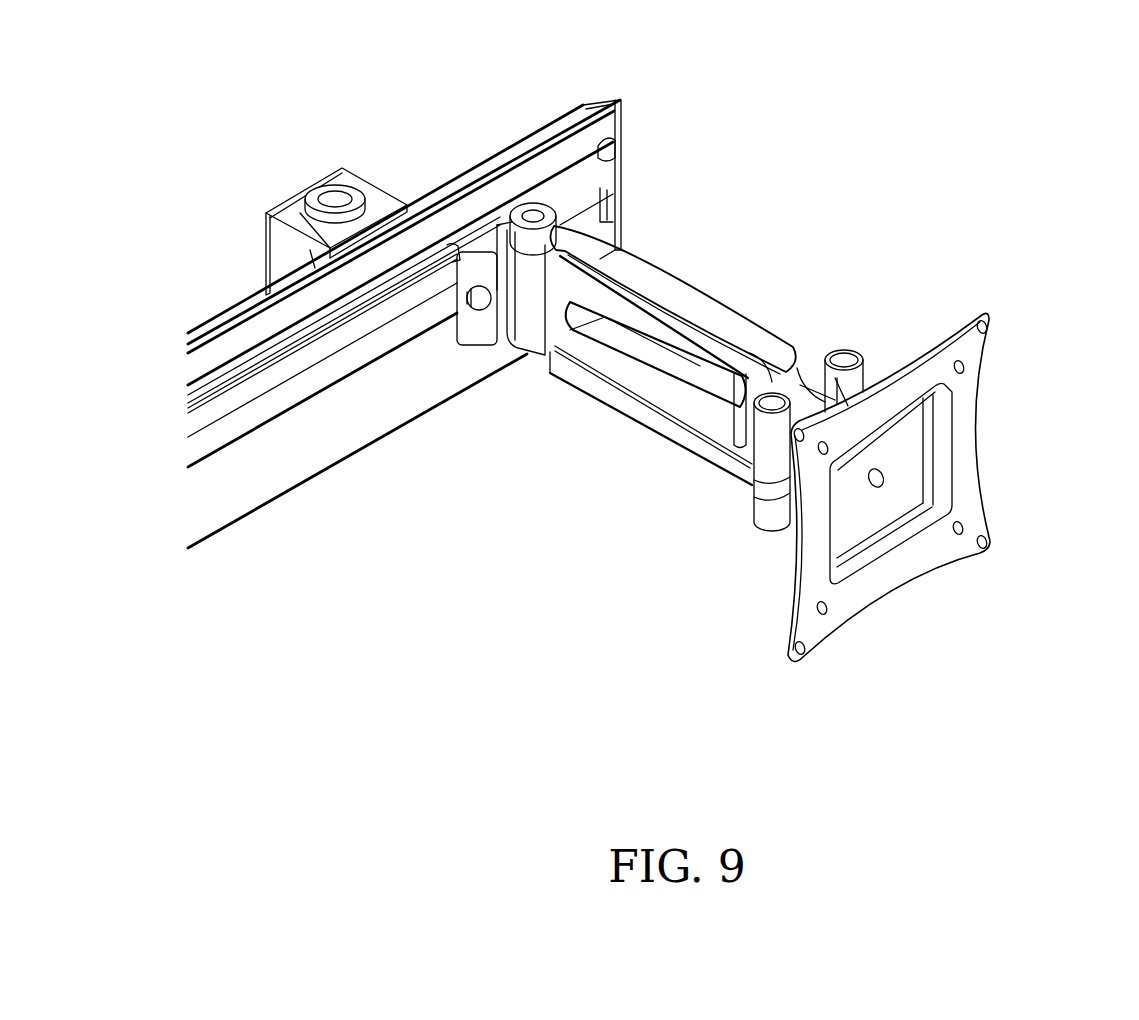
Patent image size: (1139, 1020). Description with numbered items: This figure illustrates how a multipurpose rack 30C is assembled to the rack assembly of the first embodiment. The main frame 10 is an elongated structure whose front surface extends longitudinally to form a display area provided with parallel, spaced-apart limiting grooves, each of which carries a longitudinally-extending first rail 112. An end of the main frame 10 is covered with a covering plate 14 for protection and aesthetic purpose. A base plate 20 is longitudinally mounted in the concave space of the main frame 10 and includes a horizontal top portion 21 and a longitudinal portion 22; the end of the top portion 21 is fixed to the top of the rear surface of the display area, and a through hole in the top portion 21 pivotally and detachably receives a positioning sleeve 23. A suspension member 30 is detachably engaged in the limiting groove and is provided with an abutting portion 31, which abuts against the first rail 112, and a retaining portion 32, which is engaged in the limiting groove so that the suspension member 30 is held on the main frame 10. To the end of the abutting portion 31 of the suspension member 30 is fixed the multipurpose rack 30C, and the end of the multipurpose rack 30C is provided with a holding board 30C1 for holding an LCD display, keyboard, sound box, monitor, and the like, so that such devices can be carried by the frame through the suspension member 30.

The main frame 10 is at (268, 503).
The covering plate 14 is at (623, 173).
The base plate 20 is at (303, 175).
The top portion 21 is at (287, 213).
The longitudinal portion 22 is at (263, 268).
The positioning sleeve 23 is at (323, 182).
The first rail 112 is at (453, 252).
The suspension member 30 is at (711, 442).
The abutting portion 31 is at (462, 300).
The retaining portion 32 is at (395, 252).
The multipurpose rack 30C is at (652, 410).
The holding board 30C1 is at (913, 553).